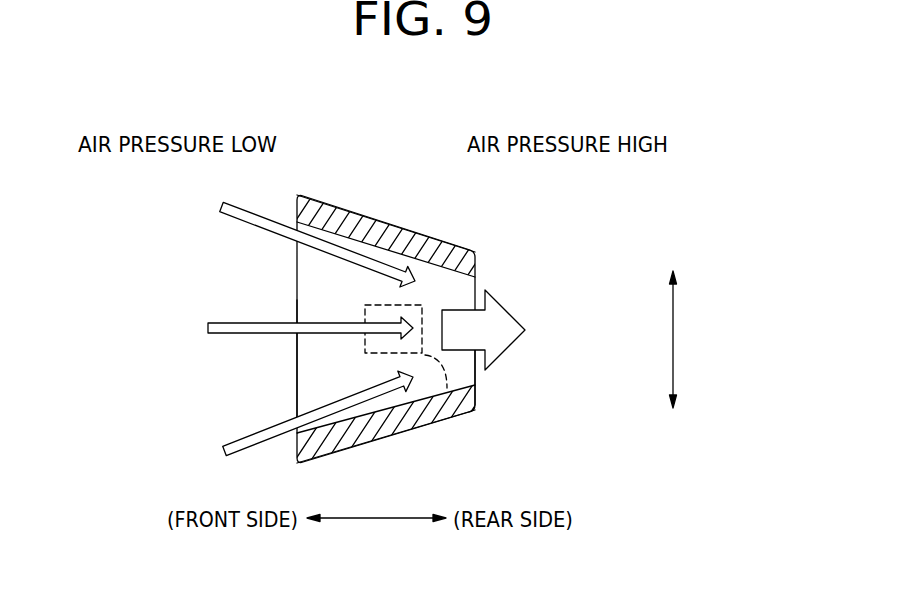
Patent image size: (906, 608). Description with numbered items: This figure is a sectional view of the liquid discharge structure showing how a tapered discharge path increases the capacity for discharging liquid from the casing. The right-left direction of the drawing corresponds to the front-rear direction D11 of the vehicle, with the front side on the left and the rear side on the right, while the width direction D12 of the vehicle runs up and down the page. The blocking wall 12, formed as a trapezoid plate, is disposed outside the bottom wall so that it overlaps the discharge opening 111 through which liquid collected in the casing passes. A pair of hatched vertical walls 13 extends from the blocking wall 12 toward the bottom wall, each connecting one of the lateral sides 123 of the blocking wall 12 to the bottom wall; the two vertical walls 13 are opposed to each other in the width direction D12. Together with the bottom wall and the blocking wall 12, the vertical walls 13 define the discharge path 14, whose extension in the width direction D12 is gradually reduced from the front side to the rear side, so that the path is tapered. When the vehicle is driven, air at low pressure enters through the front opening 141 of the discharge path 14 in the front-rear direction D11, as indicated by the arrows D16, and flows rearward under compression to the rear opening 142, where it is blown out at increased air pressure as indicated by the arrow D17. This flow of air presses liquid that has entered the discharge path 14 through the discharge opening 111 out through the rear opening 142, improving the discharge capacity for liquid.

The blocking wall 12 is at (317, 387).
The vertical walls 13 is at (380, 222).
The discharge path 14 is at (324, 269).
The discharge opening 111 is at (460, 420).
The lateral sides 123 is at (448, 241).
The front opening 141 is at (297, 358).
The rear opening 142 is at (475, 375).
The front-rear direction D11 is at (377, 519).
The width direction D12 is at (673, 335).
The arrow indicating air flow D16 is at (222, 208).
The arrow indicating air flow D17 is at (503, 303).